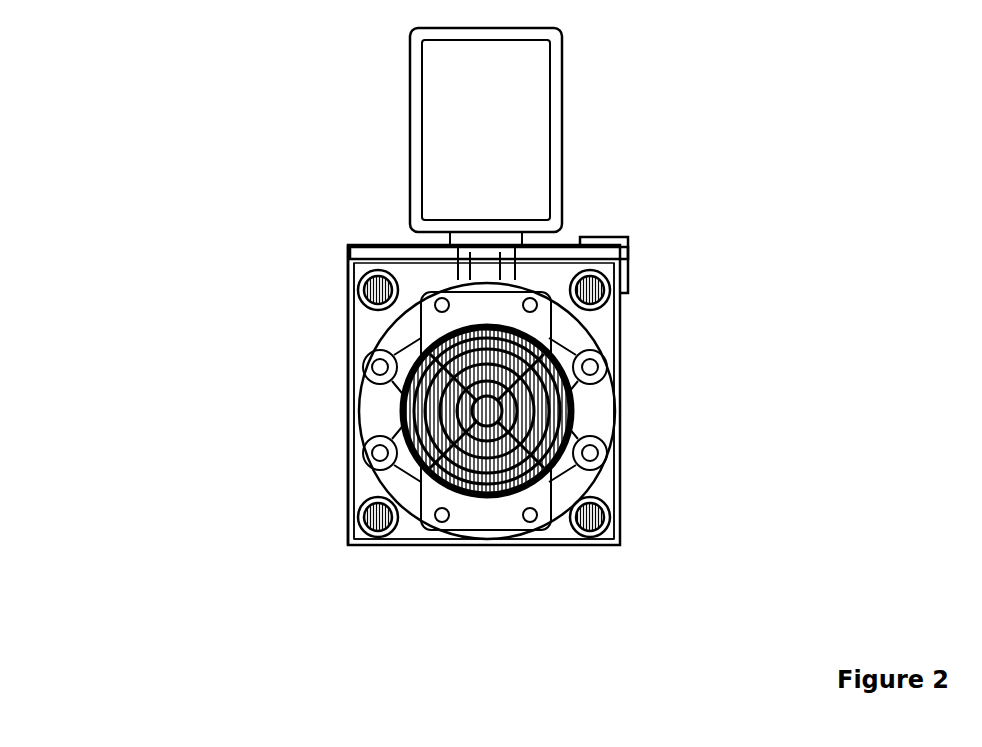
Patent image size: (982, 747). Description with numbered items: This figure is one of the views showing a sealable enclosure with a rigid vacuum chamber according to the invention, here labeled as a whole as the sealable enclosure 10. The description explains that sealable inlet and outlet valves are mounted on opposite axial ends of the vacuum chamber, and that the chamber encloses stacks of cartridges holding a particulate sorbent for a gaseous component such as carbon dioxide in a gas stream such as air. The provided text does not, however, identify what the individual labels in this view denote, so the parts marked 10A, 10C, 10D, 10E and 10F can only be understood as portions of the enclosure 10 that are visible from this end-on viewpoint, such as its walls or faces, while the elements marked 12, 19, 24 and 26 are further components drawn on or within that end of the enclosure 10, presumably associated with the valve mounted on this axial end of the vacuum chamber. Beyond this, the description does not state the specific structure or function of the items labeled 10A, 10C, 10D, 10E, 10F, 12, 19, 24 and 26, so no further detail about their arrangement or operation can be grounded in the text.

The fan assembly 10 is at (662, 382).
The left side wall 10A is at (352, 322).
The top mounting plate 10C is at (553, 247).
The bottom side 10D is at (472, 547).
The right side wall 10E is at (620, 465).
The front face 10F is at (340, 408).
The circular flange 12 is at (605, 322).
The mounting lugs 19 is at (373, 403).
The fan grille 24 is at (522, 477).
The fan blades 26 is at (446, 464).